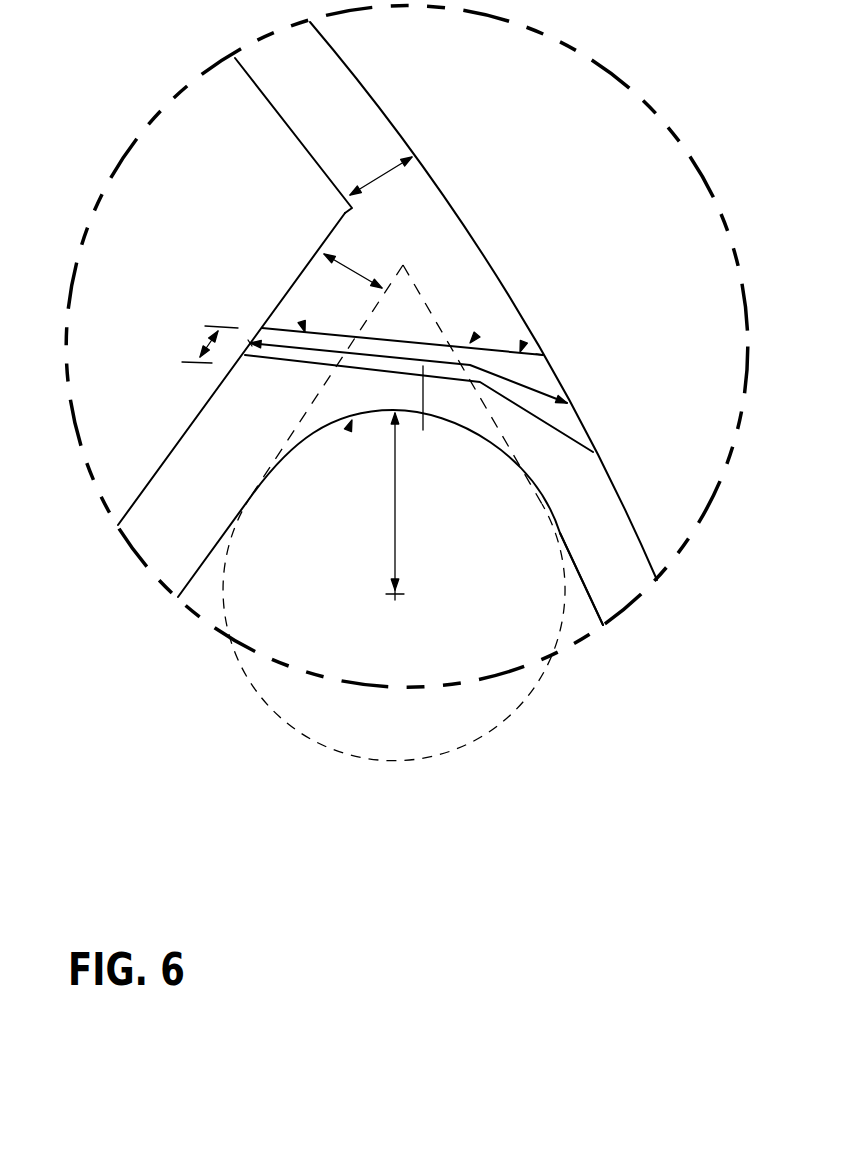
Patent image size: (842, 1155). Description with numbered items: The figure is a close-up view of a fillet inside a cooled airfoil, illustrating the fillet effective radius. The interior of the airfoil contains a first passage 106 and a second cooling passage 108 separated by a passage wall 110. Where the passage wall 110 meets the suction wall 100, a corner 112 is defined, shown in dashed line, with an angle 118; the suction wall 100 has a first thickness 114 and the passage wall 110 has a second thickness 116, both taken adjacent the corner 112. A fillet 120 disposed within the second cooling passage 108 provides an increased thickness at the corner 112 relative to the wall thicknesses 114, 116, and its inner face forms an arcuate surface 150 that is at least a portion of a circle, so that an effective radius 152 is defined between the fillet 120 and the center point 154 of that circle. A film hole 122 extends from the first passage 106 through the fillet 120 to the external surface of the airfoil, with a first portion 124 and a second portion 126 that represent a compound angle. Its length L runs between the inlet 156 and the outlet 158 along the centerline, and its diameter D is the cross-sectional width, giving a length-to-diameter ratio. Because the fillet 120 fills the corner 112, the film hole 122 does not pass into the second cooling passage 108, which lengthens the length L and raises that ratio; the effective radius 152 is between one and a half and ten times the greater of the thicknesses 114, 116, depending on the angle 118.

The suction wall 100 is at (389, 118).
The first passage 106 is at (146, 197).
The second cooling passage 108 is at (481, 584).
The passage wall 110 is at (188, 478).
The corner 112 is at (340, 213).
The first thickness 114 is at (383, 180).
The second thickness 116 is at (335, 272).
The angle 118 is at (434, 313).
The fillet 120 is at (352, 420).
The film hole 122 is at (470, 343).
The first portion 124 is at (305, 332).
The second portion 126 is at (520, 352).
The arcuate surface 150 is at (455, 425).
The effective radius 152 is at (393, 508).
The center point 154 is at (397, 598).
The inlet 156 is at (248, 343).
The outlet 158 is at (543, 355).
The diameter D is at (208, 342).
The length L is at (423, 430).